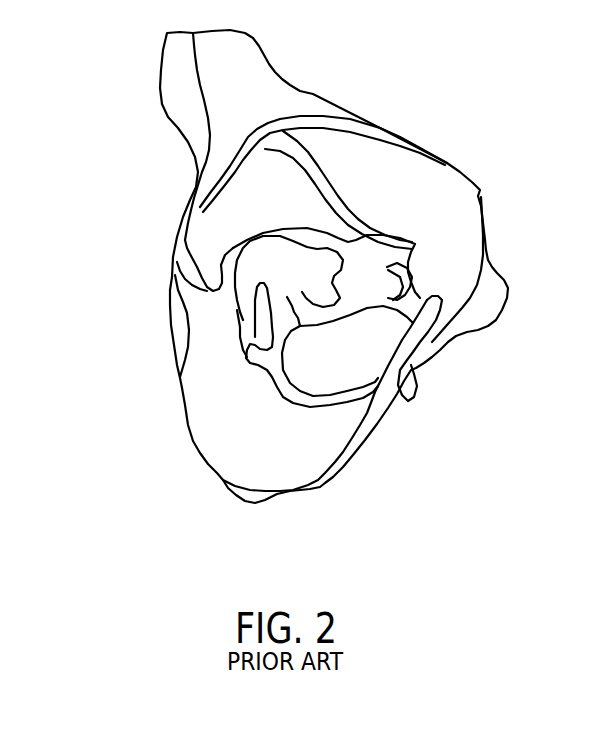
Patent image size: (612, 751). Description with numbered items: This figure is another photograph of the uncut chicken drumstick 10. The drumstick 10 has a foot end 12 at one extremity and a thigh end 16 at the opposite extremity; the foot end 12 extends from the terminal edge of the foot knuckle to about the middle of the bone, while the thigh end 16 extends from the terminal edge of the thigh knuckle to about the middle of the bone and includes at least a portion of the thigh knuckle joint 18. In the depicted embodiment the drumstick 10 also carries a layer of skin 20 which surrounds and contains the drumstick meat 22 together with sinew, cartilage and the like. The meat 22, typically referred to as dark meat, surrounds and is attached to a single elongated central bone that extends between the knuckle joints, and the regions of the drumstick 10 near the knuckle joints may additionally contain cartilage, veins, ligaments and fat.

The drumstick 10 is at (102, 157).
The foot end 12 is at (182, 53).
The thigh end 16 is at (468, 257).
The thigh knuckle joint 18 is at (355, 327).
The layer of skin 20 is at (312, 93).
The drumstick meat 22 is at (423, 175).